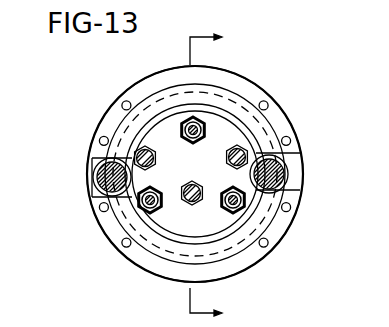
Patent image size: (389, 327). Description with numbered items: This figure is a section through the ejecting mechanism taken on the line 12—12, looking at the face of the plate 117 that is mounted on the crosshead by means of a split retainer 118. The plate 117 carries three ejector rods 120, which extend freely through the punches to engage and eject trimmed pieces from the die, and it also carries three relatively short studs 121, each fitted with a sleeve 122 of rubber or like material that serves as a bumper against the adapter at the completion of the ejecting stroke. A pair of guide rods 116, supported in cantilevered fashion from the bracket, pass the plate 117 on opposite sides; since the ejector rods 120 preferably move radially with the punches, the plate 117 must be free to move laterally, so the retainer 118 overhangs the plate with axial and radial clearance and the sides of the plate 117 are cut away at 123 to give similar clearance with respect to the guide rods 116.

The section line 12- 12 is at (199, 171).
The guide rods 116 is at (97, 182).
The plate 117 is at (227, 125).
The split retainer 118 is at (135, 95).
The ejector rods 120 is at (138, 148).
The studs 121 is at (197, 116).
The sleeve 122 is at (186, 118).
The cut away portions 123 is at (90, 158).